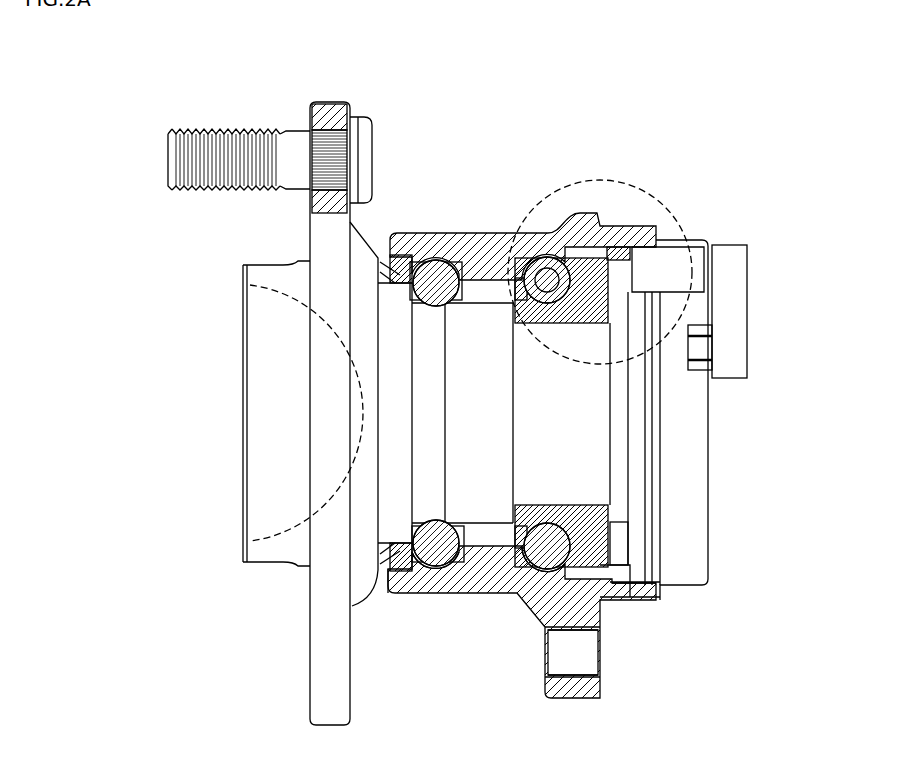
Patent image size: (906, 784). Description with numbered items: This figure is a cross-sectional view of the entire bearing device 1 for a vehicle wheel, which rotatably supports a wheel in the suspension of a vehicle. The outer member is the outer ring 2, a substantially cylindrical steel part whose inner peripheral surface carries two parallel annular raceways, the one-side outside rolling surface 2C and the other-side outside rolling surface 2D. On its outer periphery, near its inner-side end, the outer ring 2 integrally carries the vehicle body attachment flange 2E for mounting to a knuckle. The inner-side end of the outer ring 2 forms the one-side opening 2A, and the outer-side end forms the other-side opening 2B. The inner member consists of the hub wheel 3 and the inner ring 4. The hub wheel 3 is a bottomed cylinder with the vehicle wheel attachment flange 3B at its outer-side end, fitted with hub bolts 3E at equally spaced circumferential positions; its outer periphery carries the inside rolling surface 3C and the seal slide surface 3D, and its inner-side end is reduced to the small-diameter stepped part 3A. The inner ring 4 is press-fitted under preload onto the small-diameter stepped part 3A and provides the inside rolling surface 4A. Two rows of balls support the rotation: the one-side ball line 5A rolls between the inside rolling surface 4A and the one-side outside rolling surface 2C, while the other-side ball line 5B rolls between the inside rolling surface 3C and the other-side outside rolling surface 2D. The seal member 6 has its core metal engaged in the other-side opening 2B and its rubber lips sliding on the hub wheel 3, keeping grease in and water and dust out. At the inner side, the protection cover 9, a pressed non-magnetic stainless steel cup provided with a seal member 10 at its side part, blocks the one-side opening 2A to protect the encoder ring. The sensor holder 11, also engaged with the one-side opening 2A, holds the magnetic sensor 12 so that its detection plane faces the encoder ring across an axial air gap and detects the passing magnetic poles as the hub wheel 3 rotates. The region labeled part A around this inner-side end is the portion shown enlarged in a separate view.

The bearing device for vehicle wheel 1 is at (92, 96).
The outer ring 2 is at (490, 187).
The one-side opening 2A is at (621, 590).
The other-side opening 2B is at (386, 598).
The one-side outside rolling surface 2C is at (542, 566).
The other-side outside rolling surface 2D is at (450, 566).
The vehicle body attachment flange 2E is at (596, 691).
The hub wheel 3 is at (220, 243).
The small-diameter stepped part 3A is at (540, 325).
The vehicle wheel attachment flange 3B is at (315, 712).
The inside rolling surface 3C is at (440, 522).
The seal slide surface 3D is at (395, 292).
The hub bolt 3E is at (168, 162).
The inner ring 4 is at (580, 505).
The inside rolling surface 4A is at (543, 505).
The one-side ball line 5A is at (545, 258).
The other-side ball line 5B is at (435, 261).
The seal member 6 is at (395, 258).
The protection cover 9 is at (601, 600).
The seal member 10 is at (614, 250).
The sensor holder 11 is at (712, 433).
The magnetic sensor 12 is at (740, 271).
The part A is at (667, 190).